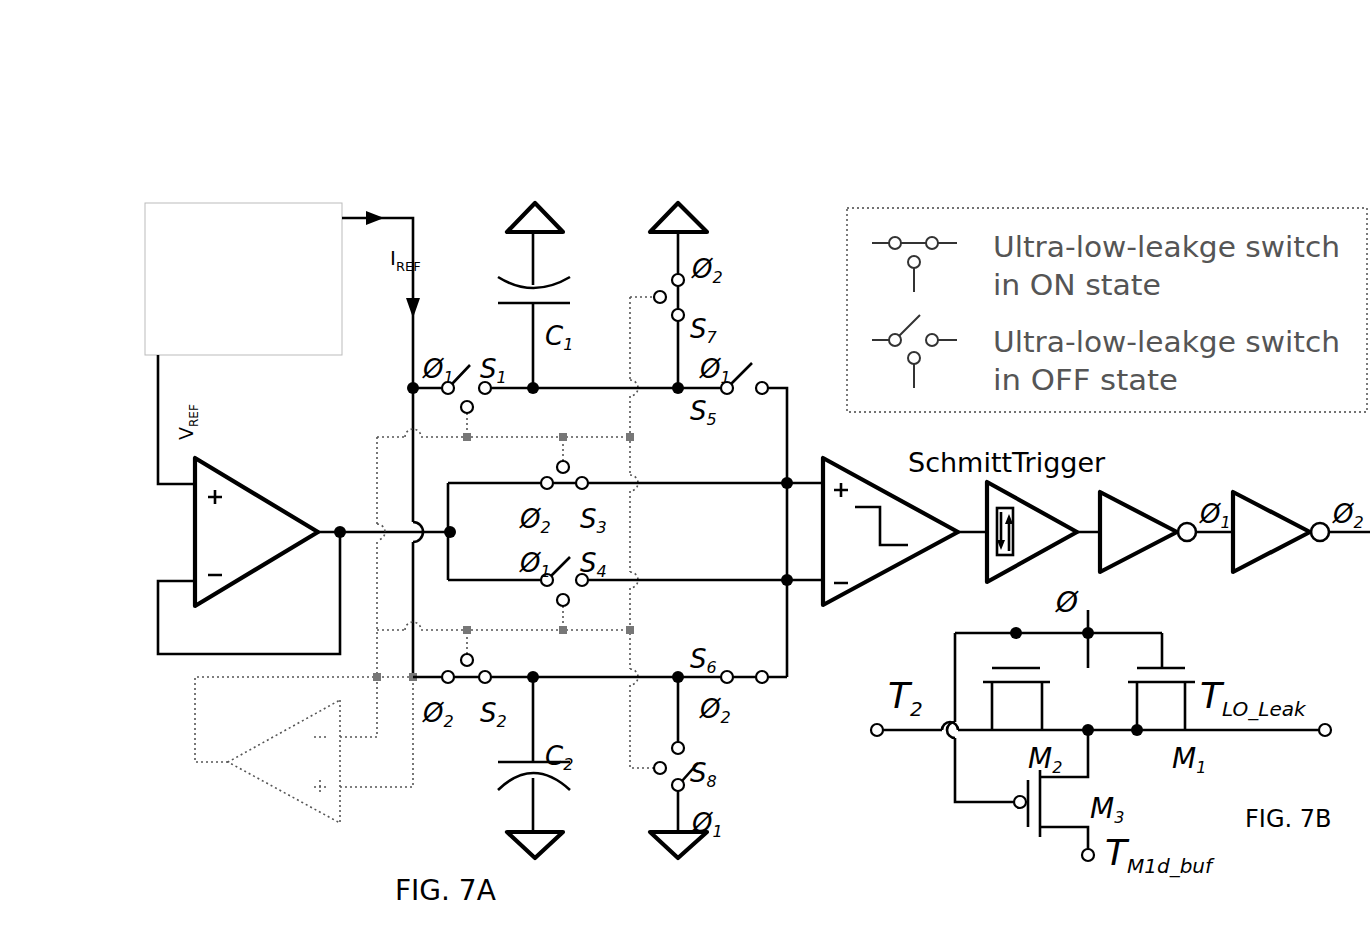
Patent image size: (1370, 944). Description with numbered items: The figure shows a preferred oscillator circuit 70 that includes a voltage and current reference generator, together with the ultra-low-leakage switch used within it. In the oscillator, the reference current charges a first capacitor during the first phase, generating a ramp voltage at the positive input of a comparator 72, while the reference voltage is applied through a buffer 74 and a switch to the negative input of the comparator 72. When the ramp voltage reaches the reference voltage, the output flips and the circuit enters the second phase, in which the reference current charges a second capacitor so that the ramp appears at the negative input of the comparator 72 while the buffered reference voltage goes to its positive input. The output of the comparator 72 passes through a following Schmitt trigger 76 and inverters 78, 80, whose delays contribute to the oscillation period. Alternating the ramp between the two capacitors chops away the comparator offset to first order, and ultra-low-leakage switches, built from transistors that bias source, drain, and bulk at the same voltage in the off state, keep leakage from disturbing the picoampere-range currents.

The oscillator circuit 70 is at (98, 287).
The comparator 72 is at (855, 512).
The buffer 74 is at (249, 500).
The Schmitt trigger 76 is at (987, 571).
The inverter 78 is at (1143, 514).
The inverter 80 is at (1291, 514).